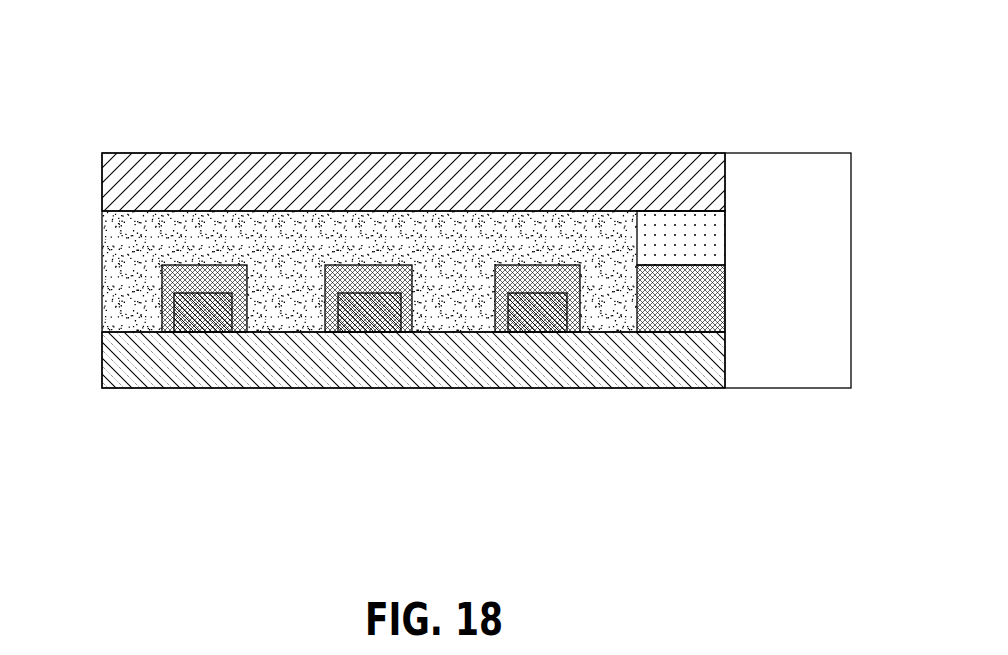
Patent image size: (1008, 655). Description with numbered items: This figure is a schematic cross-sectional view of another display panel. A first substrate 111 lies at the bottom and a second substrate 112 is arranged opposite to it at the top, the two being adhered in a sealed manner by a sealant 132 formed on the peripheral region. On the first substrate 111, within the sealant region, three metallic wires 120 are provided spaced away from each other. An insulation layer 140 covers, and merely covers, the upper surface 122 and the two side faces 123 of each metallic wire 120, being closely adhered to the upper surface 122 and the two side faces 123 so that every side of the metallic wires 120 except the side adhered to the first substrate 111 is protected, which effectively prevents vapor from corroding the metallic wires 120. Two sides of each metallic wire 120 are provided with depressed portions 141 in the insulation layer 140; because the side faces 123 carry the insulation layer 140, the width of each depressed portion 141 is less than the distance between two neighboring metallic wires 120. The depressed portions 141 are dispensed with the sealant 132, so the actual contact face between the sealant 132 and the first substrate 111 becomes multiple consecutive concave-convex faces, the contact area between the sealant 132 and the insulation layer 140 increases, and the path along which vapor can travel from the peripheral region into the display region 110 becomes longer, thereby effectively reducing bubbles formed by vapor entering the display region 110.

The display region 110 is at (797, 323).
The first substrate 111 is at (477, 357).
The second substrate 112 is at (180, 174).
The metallic wire 120 is at (212, 313).
The upper surface 122 is at (370, 291).
The side face 123 is at (398, 318).
The sealant 132 is at (260, 236).
The insulation layer 140 is at (438, 277).
The depressed portion 141 is at (133, 305).